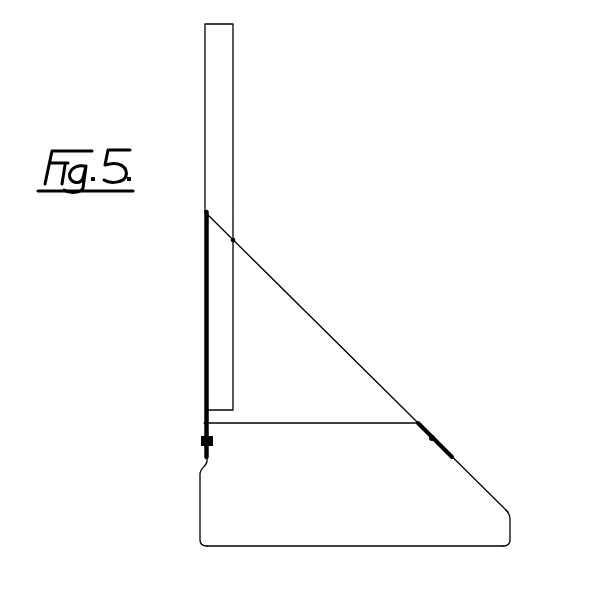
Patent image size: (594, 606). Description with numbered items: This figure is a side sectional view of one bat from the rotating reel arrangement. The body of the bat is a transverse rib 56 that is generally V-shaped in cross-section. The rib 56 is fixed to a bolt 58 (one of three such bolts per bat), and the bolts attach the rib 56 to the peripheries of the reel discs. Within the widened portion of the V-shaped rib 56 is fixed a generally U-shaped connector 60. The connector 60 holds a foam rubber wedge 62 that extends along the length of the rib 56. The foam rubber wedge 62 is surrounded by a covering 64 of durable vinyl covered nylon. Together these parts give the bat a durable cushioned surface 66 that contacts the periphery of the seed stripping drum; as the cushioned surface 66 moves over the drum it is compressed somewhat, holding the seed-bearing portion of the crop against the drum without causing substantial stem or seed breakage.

The transverse rib 56 is at (203, 311).
The bolt 58 is at (225, 124).
The U-shaped connector 60 is at (309, 423).
The foam rubber wedge 62 is at (458, 486).
The covering 64 is at (512, 527).
The cushioned surface 66 is at (337, 547).